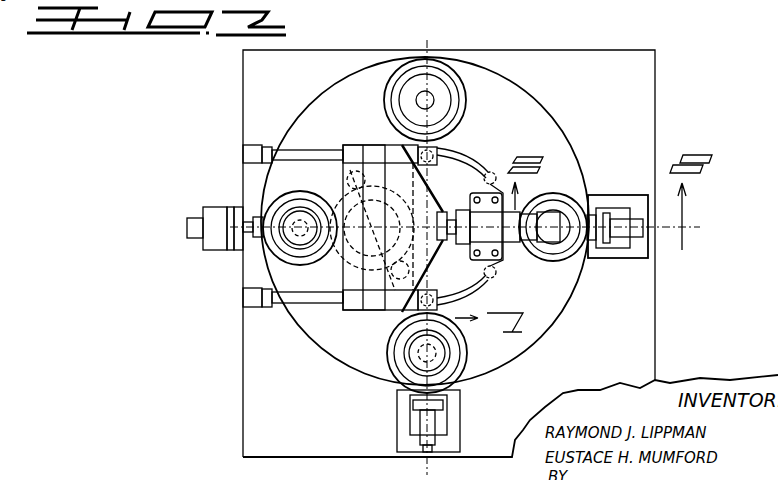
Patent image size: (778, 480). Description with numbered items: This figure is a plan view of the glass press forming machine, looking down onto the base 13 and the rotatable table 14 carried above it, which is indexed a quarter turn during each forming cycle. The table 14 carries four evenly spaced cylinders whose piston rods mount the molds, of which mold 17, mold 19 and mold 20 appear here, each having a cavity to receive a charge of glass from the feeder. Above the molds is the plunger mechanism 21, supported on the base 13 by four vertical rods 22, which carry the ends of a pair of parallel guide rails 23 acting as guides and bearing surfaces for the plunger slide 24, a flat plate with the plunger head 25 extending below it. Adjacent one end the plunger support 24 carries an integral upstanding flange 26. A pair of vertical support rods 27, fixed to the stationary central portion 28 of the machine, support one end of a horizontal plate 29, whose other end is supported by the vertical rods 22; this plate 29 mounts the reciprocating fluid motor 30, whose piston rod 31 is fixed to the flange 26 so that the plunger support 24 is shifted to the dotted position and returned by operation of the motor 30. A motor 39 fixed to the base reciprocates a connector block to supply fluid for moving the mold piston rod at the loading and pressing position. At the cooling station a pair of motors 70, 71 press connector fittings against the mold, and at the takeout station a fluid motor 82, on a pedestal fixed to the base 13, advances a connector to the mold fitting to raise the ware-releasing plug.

The base 13 is at (645, 93).
The rotatable table 14 is at (483, 90).
The mold 17 is at (273, 208).
The mold 19 is at (393, 370).
The mold 20 is at (447, 42).
The plunger mechanism 21 is at (386, 138).
The vertical rods 22 is at (245, 152).
The guide rails 23 is at (268, 148).
The plunger slide 24 is at (422, 198).
The plunger head 25 is at (355, 195).
The upstanding flange 26 is at (440, 214).
The vertical support rods 27 is at (491, 171).
The stationary central portion 28 is at (465, 150).
The horizontal plate 29 is at (478, 285).
The reciprocating fluid motor 30 is at (545, 220).
The piston rod 31 is at (448, 240).
The motor 39 is at (187, 224).
The motor 70 is at (423, 440).
The motor 71 is at (427, 418).
The fluid motor 82 is at (645, 222).